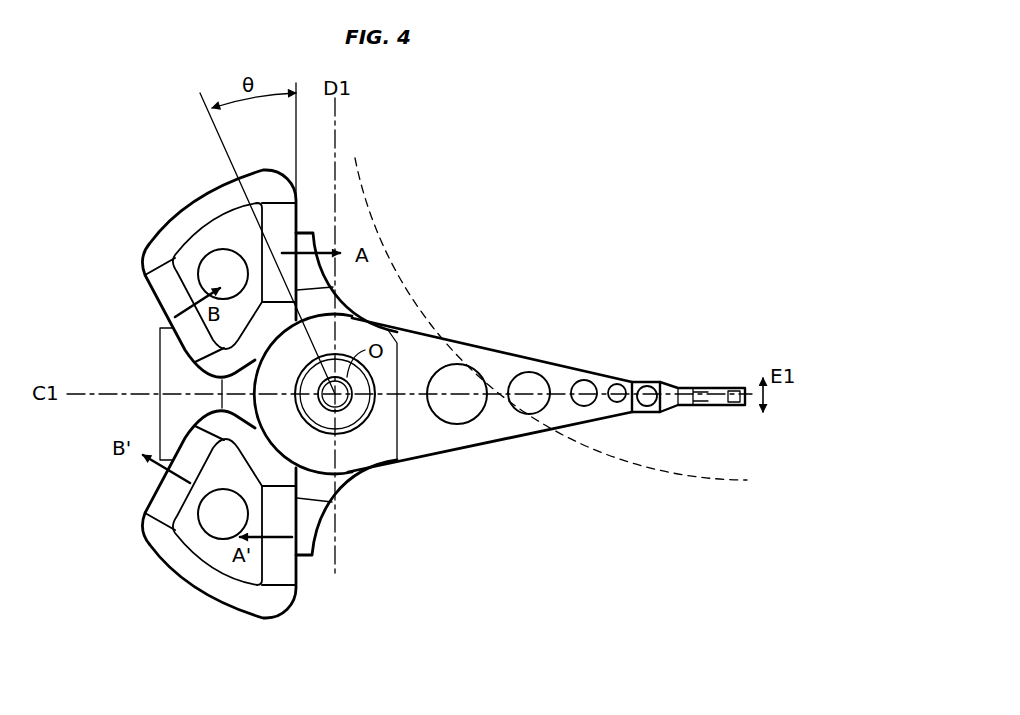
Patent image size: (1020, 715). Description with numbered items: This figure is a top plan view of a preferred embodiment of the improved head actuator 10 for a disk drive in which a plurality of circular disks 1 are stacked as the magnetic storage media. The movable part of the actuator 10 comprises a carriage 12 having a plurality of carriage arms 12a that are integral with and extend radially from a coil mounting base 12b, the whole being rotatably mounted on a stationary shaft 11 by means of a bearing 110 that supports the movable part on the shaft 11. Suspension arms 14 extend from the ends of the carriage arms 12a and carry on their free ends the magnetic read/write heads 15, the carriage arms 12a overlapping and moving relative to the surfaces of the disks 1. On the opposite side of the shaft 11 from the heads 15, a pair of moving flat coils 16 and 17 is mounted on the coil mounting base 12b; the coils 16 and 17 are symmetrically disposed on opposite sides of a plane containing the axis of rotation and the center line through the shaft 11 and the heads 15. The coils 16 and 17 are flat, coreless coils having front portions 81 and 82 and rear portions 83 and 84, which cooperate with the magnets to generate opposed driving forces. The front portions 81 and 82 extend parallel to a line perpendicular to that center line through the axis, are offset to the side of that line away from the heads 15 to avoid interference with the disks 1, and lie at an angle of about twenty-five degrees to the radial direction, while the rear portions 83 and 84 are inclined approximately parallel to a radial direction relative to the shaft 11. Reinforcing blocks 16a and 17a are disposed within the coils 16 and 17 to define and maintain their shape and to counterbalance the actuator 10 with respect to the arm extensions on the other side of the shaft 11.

The circular disks 1 is at (670, 477).
The actuator 10 is at (473, 330).
The shaft 11 is at (347, 403).
The carriage 12 is at (320, 485).
The carriage arms 12a is at (493, 425).
The coil mounting base 12b is at (173, 372).
The suspension arms 14 is at (720, 412).
The magnetic read/write heads 15 is at (730, 385).
The moving flat coil 16 is at (162, 216).
The reinforcing block 16a is at (215, 237).
The moving flat coil 17 is at (157, 573).
The reinforcing block 17a is at (213, 555).
The front portion 81 is at (218, 232).
The front portion 82 is at (283, 563).
The rear portion 83 is at (162, 287).
The rear portion 84 is at (167, 500).
The bearing 110 is at (372, 410).